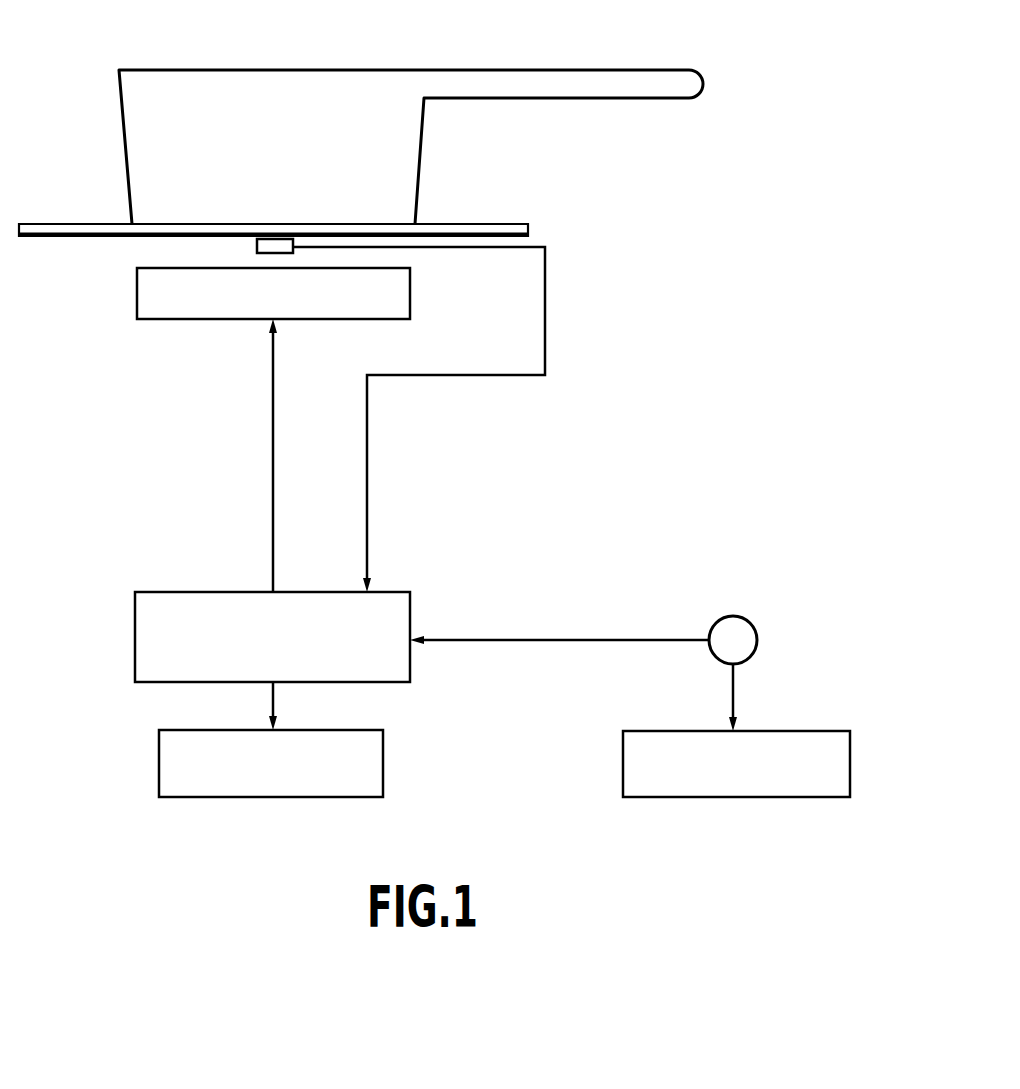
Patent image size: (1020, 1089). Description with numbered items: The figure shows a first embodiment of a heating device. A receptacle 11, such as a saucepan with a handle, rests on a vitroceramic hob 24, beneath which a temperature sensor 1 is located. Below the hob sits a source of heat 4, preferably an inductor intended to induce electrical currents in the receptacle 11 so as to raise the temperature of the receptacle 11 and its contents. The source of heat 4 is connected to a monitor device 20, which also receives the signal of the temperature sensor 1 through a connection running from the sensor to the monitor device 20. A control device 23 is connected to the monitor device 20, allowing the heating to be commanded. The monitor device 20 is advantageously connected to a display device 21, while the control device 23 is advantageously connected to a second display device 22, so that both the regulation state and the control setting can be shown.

The temperature sensor 1 is at (257, 246).
The source of heat 4 is at (137, 297).
The receptacle 11 is at (545, 70).
The monitor device 20 is at (135, 640).
The display device 21 is at (383, 760).
The display device 22 is at (775, 797).
The control device 23 is at (757, 638).
The vitroceramic hob 24 is at (493, 224).